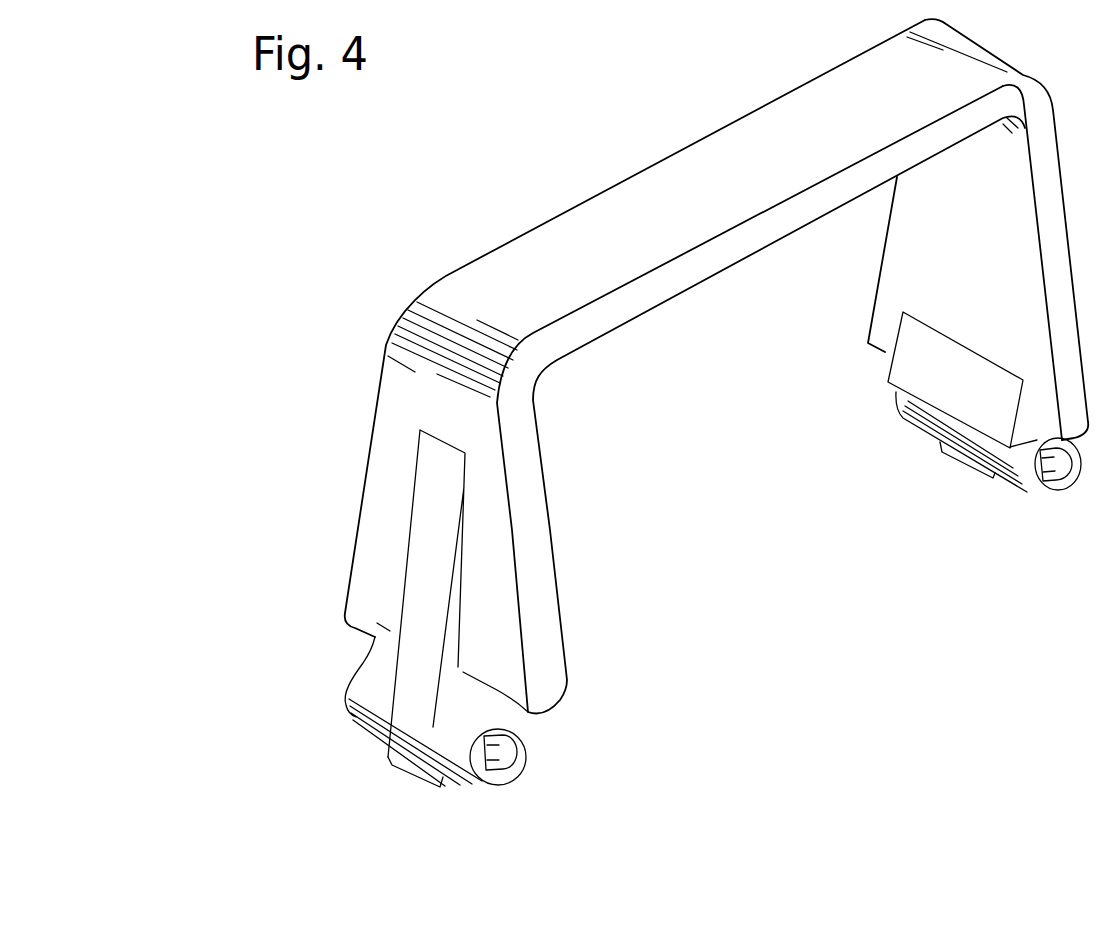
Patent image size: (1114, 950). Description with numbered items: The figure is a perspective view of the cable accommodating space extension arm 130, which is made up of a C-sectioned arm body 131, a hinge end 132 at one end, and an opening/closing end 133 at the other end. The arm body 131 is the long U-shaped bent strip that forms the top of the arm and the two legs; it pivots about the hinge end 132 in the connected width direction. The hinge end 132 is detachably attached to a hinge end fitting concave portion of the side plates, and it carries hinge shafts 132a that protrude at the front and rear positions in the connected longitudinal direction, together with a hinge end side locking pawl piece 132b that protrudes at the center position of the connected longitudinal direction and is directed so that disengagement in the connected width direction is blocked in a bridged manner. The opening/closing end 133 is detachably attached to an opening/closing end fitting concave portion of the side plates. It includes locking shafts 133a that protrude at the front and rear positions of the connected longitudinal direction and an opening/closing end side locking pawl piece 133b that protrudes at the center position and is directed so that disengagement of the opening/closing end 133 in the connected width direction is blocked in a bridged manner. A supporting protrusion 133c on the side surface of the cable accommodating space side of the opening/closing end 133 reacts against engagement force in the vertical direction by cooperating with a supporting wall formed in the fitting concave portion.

The cable accommodating space extension arm 130 is at (832, 662).
The arm body 131 is at (623, 210).
The hinge end 132 is at (593, 868).
The hinge shaft 132a is at (517, 767).
The hinge end side locking pawl piece 132b is at (412, 757).
The opening/closing end 133 is at (1088, 552).
The locking shaft 133a is at (1062, 468).
The opening/closing end side locking pawl piece 133b is at (968, 466).
The supporting protrusion 133c is at (915, 363).